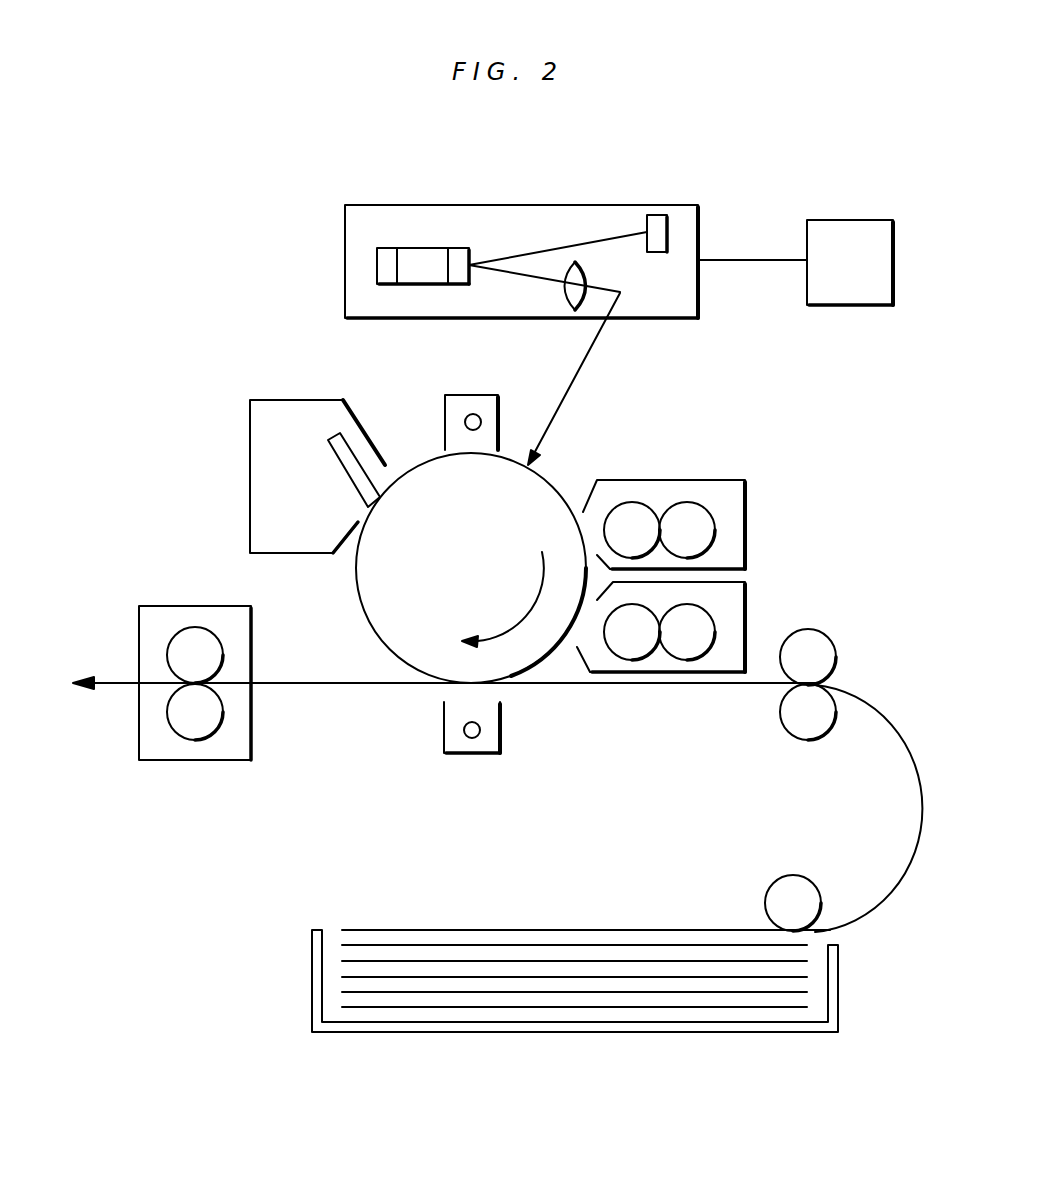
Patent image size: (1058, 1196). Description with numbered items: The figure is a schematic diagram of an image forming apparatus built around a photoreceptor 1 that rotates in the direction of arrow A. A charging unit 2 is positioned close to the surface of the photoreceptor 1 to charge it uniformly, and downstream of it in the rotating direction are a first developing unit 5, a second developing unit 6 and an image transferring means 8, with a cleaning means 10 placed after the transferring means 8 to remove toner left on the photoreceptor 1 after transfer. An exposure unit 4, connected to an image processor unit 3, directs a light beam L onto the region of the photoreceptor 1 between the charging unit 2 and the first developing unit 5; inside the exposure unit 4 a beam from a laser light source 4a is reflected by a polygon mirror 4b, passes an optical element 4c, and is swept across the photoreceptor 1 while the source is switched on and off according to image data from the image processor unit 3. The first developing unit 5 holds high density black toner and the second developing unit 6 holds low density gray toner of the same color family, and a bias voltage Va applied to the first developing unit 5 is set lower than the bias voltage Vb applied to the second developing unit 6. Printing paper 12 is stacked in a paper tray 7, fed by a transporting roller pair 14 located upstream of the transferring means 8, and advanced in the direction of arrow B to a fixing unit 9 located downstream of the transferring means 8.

The photoreceptor 1 is at (362, 604).
The charging unit 2 is at (472, 395).
The image processor unit 3 is at (848, 220).
The exposure unit 4 is at (385, 205).
The laser light source 4a is at (654, 215).
The polygon mirror 4b is at (457, 248).
The lens 4c is at (596, 264).
The first developing unit 5 is at (670, 480).
The second developing unit 6 is at (746, 592).
The paper tray 7 is at (309, 982).
The image transferring means 8 is at (503, 727).
The fixing unit 9 is at (195, 606).
The cleaning means 10 is at (297, 400).
The printing paper 12 is at (896, 726).
The transporting roller pair 14 is at (838, 650).
The light beam L is at (596, 346).
The arrow indicating photoreceptor rotating direction A is at (528, 608).
The arrow indicating paper advancing direction B is at (110, 688).
The bias voltage applied to first developing unit Va is at (782, 510).
The bias voltage applied to second developing unit Vb is at (782, 628).